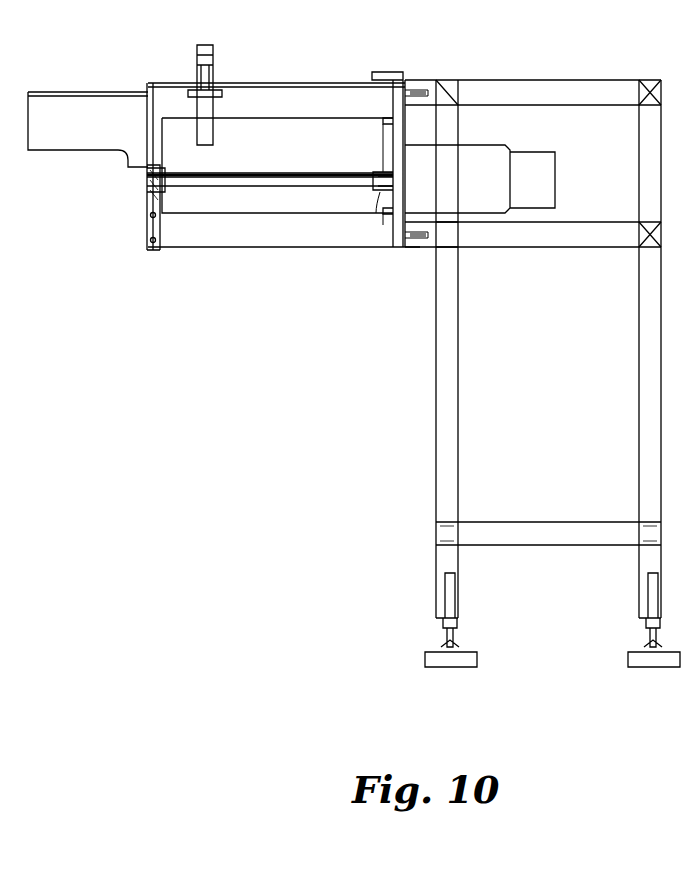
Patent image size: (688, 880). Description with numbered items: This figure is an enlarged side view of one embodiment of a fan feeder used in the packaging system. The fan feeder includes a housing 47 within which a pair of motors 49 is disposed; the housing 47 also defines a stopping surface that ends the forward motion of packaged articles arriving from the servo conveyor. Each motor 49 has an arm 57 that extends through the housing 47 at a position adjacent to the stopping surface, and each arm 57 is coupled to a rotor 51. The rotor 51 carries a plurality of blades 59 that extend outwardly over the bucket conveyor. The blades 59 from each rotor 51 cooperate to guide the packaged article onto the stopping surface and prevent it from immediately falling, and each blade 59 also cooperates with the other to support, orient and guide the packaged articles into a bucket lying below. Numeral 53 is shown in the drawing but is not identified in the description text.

The housing 47 is at (533, 92).
The motor 49 is at (555, 165).
The rotor 51 is at (288, 187).
The housing 53 is at (287, 95).
The arm 57 is at (380, 202).
The blade 59 is at (200, 203).